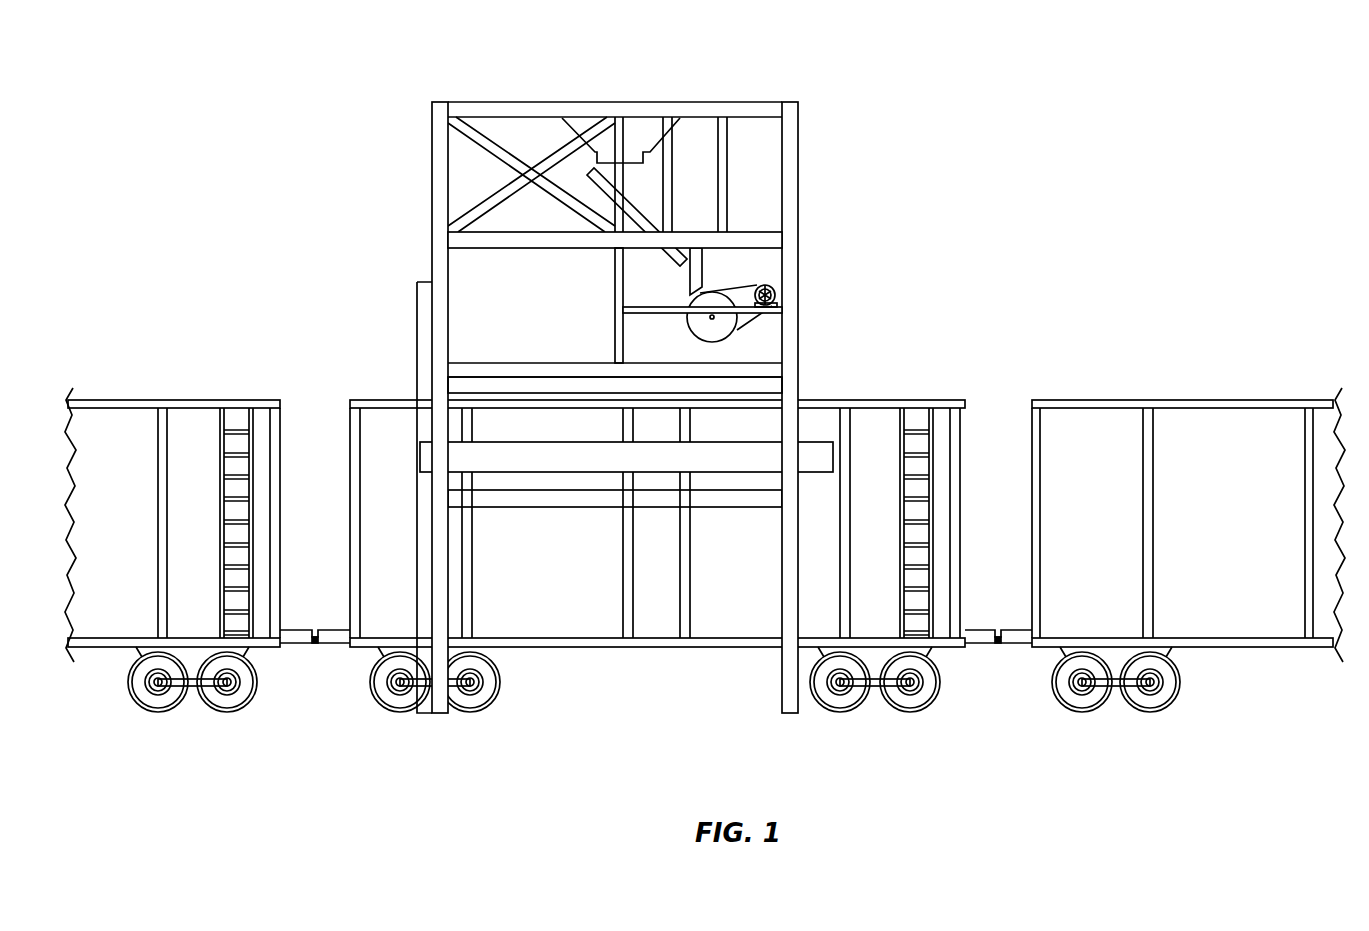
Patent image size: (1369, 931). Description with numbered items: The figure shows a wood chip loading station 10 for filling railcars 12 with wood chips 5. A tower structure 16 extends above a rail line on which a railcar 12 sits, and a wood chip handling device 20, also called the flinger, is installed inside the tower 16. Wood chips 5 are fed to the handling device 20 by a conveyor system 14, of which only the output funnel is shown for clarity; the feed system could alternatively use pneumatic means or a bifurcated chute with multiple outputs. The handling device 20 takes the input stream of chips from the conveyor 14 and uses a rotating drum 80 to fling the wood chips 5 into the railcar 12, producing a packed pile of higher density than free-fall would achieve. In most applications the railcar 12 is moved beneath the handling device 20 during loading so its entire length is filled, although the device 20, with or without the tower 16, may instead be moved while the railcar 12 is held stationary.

The wood chip loading station 10 is at (880, 80).
The railcar 12 is at (123, 423).
The conveyor system 14 is at (643, 137).
The tower structure 16 is at (442, 178).
The wood chip handling device 20 is at (596, 285).
The rotating drum 80 is at (695, 323).
The wood chips 5 is at (767, 385).